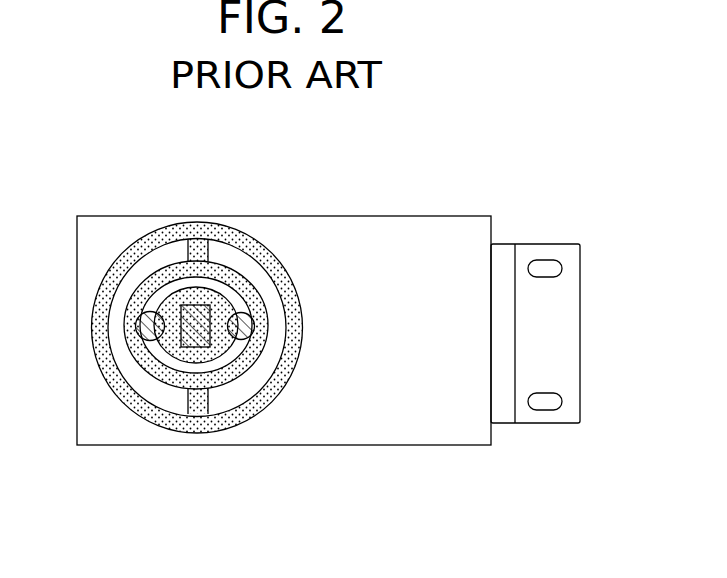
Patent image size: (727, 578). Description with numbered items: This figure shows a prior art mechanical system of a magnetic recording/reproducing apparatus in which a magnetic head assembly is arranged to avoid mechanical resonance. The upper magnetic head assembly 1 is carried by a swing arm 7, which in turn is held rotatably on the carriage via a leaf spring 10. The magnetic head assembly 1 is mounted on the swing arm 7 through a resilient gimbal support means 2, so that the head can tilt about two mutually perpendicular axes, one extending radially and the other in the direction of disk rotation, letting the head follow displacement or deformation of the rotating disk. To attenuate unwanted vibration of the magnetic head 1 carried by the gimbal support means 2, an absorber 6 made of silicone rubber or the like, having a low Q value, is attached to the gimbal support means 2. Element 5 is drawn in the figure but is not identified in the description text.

The upper magnetic head assembly 1 is at (226, 290).
The gimbal support means 2 is at (280, 410).
The coil bobbin 5 is at (170, 258).
The absorber 6 is at (238, 333).
The swing arm 7 is at (370, 244).
The leaf spring 10 is at (503, 252).